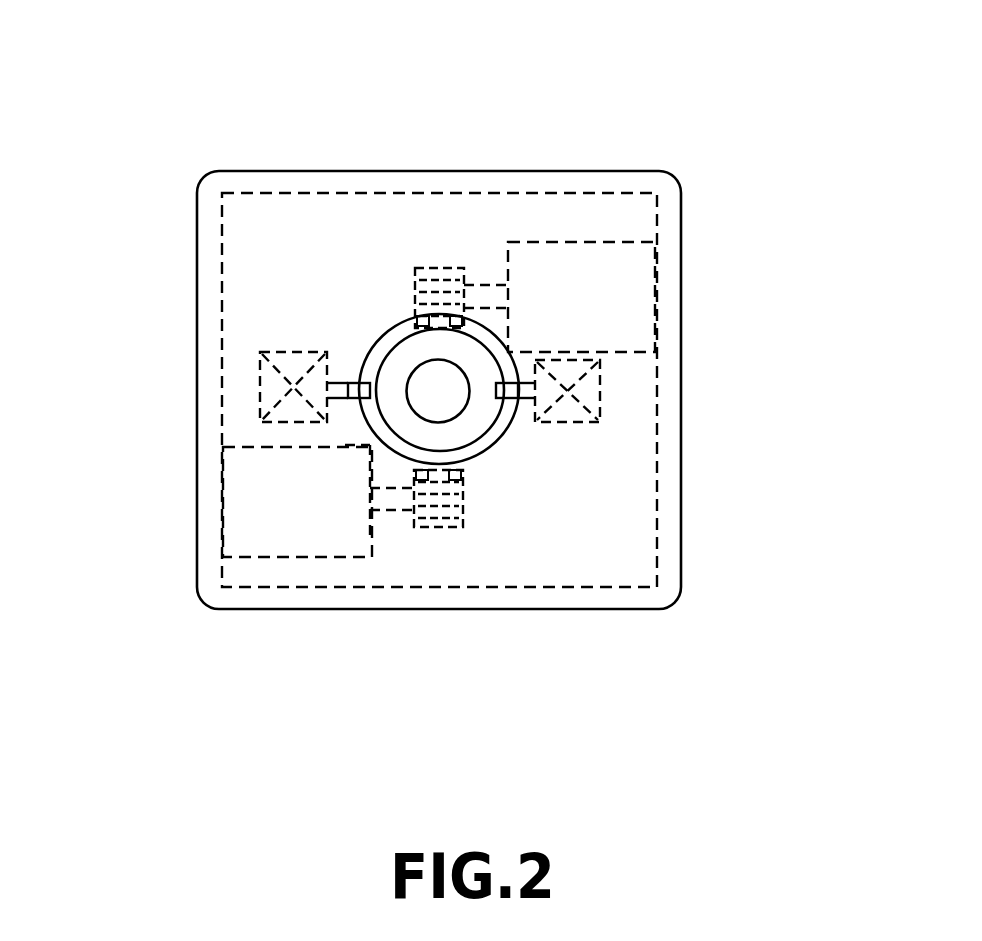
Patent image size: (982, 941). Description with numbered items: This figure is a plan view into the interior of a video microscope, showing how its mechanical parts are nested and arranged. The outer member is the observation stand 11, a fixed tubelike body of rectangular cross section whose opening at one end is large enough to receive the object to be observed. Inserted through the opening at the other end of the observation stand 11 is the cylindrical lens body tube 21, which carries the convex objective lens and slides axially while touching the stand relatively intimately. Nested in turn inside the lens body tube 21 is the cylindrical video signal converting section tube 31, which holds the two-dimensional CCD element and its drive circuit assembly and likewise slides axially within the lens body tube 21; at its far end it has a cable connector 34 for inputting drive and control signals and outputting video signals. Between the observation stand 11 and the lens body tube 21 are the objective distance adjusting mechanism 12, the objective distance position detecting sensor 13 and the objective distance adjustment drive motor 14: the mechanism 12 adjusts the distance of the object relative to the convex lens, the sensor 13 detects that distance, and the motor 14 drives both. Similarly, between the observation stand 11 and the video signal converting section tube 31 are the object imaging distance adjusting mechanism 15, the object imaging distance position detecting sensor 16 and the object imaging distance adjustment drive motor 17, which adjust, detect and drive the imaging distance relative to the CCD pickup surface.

The observation stand 11 is at (533, 170).
The objective distance adjusting mechanism 12 is at (470, 475).
The objective distance position detecting sensor 13 is at (260, 388).
The objective distance adjustment drive motor 14 is at (257, 503).
The object imaging distance adjusting mechanism 15 is at (403, 293).
The object imaging distance position detecting sensor 16 is at (602, 395).
The object imaging distance adjustment drive motor 17 is at (625, 283).
The lens body tube 21 is at (380, 328).
The video signal converting section tube 31 is at (376, 353).
The cable connector 34 is at (800, 547).